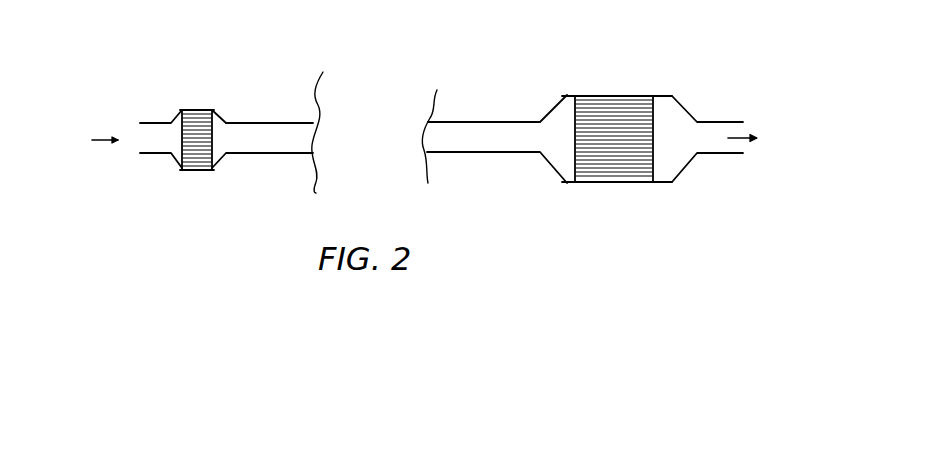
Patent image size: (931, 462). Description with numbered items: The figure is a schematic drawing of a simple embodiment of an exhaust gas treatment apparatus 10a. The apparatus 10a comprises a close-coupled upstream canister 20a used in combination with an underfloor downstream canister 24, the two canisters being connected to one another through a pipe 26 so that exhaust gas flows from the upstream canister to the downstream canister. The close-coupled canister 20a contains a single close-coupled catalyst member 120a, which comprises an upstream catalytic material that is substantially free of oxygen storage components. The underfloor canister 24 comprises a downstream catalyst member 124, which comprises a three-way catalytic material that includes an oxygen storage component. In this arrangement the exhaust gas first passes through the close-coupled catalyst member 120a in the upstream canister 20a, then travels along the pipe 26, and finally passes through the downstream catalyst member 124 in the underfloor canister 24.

The exhaust gas treatment apparatus 10a is at (370, 62).
The close-coupled upstream canister 20a is at (181, 131).
The close-coupled catalyst member 120a is at (211, 152).
The pipe 26 is at (468, 120).
The underfloor downstream canister 24 is at (652, 107).
The downstream catalyst member 124 is at (657, 123).